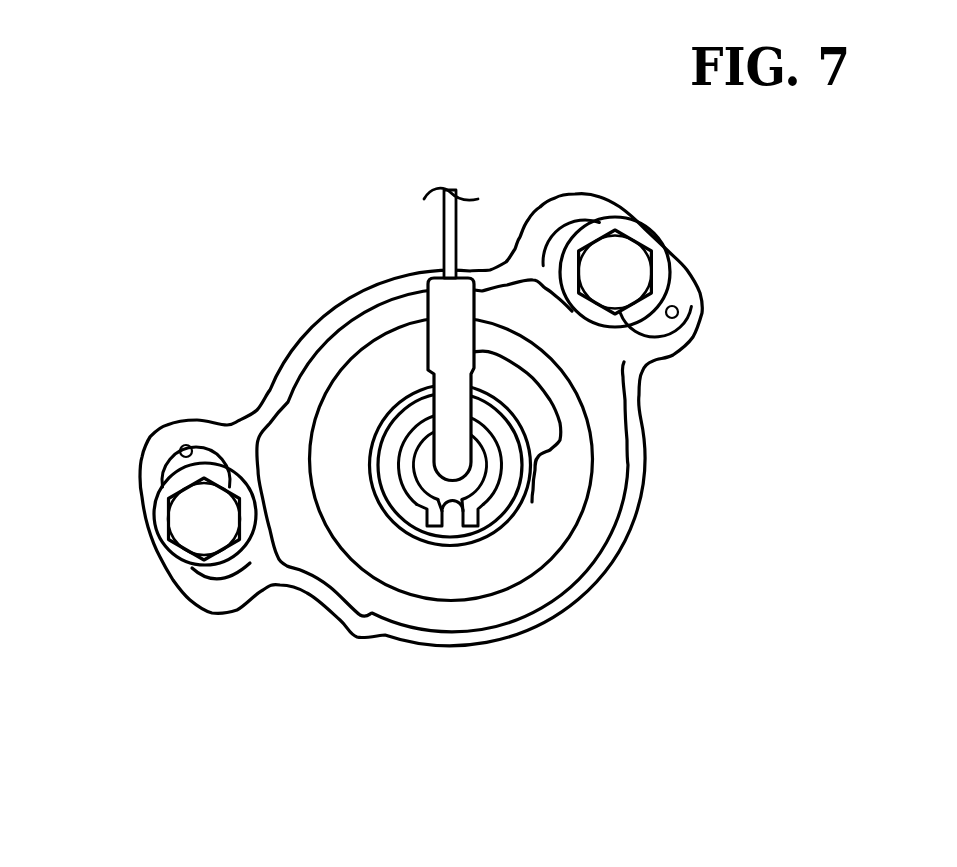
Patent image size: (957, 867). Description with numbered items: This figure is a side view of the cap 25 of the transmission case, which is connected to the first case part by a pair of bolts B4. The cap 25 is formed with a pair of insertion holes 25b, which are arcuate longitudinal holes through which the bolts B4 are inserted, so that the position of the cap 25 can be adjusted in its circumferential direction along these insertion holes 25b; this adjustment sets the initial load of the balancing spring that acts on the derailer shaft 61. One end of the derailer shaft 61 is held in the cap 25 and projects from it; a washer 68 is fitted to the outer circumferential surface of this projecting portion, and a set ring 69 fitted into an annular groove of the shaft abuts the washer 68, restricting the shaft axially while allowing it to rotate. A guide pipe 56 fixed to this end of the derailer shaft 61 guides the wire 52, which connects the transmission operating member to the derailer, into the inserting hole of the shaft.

The cap 25 is at (470, 582).
The insertion holes 25b is at (180, 449).
The bolts B4 is at (200, 528).
The wire 52 is at (445, 226).
The guide pipe 56 is at (440, 350).
The derailer shaft 61 is at (478, 472).
The washer 68 is at (508, 505).
The set ring 69 is at (415, 489).